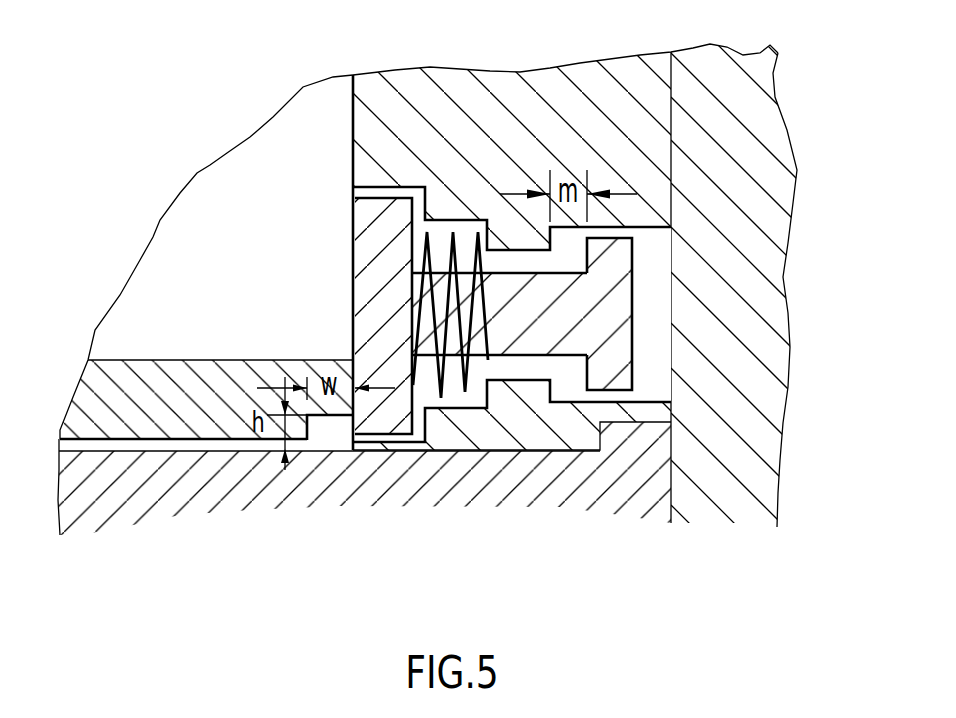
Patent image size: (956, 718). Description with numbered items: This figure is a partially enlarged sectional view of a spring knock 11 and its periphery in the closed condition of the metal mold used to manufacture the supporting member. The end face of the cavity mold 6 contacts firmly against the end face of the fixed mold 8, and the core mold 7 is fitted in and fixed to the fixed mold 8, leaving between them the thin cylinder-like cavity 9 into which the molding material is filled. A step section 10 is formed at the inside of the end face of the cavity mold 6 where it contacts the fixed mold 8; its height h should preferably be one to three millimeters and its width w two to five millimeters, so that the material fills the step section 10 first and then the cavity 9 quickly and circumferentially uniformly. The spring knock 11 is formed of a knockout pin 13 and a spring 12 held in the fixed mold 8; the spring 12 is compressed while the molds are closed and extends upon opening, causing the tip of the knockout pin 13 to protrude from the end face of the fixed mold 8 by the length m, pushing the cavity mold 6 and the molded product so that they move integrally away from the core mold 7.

The cavity mold 6 is at (182, 432).
The core mold 7 is at (107, 480).
The fixed mold 8 is at (478, 103).
The cavity 9 is at (245, 445).
The step section 10 is at (330, 437).
The spring knock 11 is at (525, 373).
The spring 12 is at (462, 370).
The knockout pin 13 is at (597, 380).